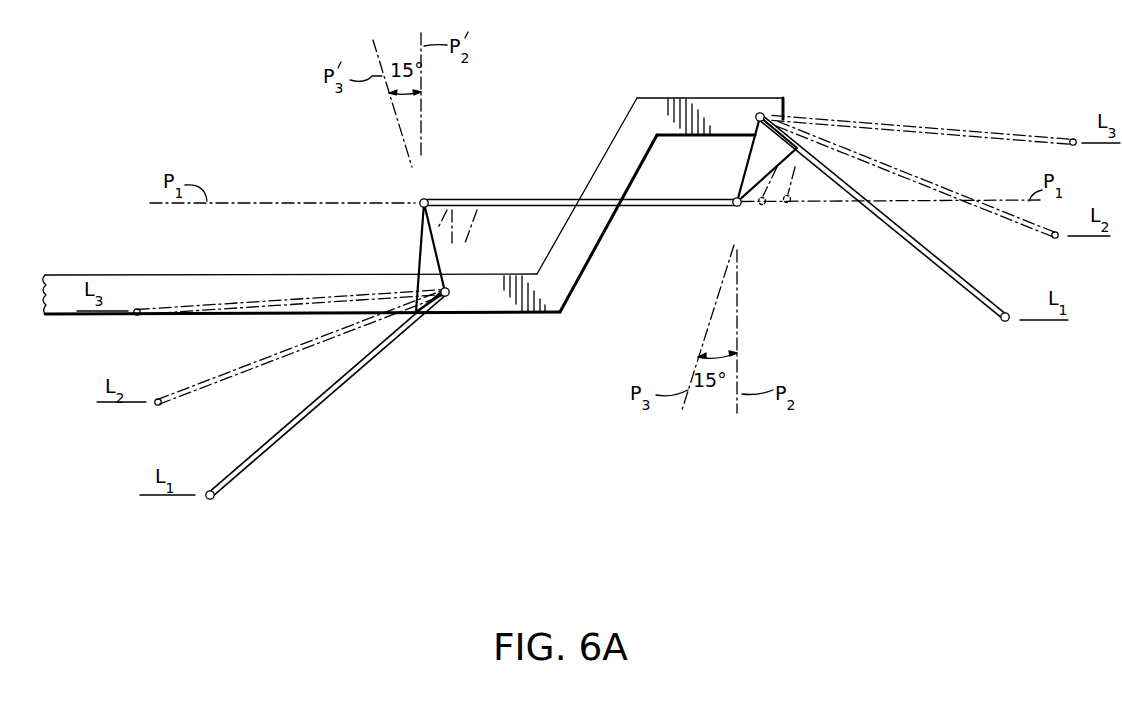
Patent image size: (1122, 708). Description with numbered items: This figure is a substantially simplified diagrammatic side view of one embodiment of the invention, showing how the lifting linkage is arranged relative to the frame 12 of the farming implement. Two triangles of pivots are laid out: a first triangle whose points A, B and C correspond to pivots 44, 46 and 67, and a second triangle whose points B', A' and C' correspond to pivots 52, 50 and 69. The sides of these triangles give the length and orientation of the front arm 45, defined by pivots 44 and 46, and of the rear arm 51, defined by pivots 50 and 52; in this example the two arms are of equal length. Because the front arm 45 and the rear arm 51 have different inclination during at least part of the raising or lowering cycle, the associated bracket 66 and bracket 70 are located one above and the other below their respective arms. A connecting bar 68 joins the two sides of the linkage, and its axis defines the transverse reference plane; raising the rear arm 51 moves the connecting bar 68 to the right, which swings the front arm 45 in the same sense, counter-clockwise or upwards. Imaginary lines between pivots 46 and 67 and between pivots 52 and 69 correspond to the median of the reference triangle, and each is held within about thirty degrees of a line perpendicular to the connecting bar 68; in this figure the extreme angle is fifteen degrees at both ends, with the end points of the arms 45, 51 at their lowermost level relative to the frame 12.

The frame 12 is at (278, 273).
The bracket 70 is at (415, 238).
The connecting bar 68 is at (650, 208).
The bracket 66 is at (746, 159).
The front arm 45 is at (912, 244).
The rear arm 51 is at (318, 417).
The pivot 69 is at (420, 196).
The pivot 67 is at (737, 209).
The pivot 46 is at (760, 112).
The pivot 52 is at (449, 296).
The pivot 44 is at (1005, 322).
The pivot 50 is at (210, 500).